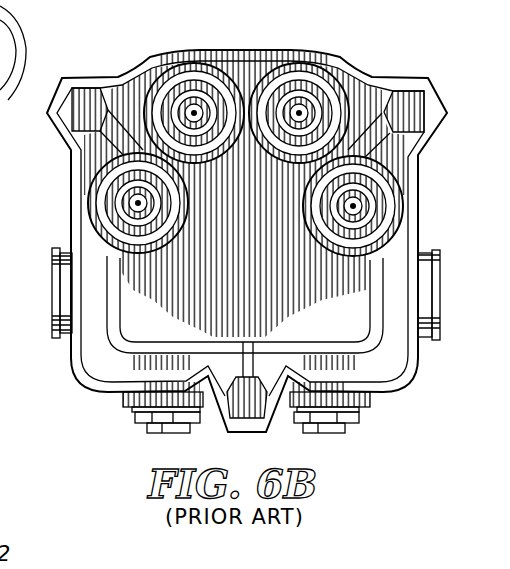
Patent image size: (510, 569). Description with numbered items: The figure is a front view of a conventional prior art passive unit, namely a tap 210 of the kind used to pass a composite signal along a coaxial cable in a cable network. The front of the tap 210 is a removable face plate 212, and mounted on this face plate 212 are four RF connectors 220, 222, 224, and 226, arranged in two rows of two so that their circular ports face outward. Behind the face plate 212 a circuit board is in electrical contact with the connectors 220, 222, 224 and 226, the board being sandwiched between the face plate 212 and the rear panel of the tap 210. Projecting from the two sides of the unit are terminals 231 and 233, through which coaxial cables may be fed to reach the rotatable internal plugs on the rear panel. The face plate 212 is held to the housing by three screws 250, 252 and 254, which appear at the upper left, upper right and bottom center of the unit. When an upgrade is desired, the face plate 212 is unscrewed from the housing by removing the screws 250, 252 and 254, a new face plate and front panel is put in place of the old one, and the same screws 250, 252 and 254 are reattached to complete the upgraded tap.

The tap 210 is at (66, 383).
The removable face plate 212 is at (378, 397).
The RF connector 220 is at (142, 210).
The RF connector 222 is at (200, 110).
The RF connector 224 is at (308, 110).
The RF connector 226 is at (347, 215).
The terminal 231 is at (52, 323).
The terminal 233 is at (441, 323).
The screw 250 is at (86, 93).
The screw 252 is at (437, 48).
The screw 254 is at (248, 405).